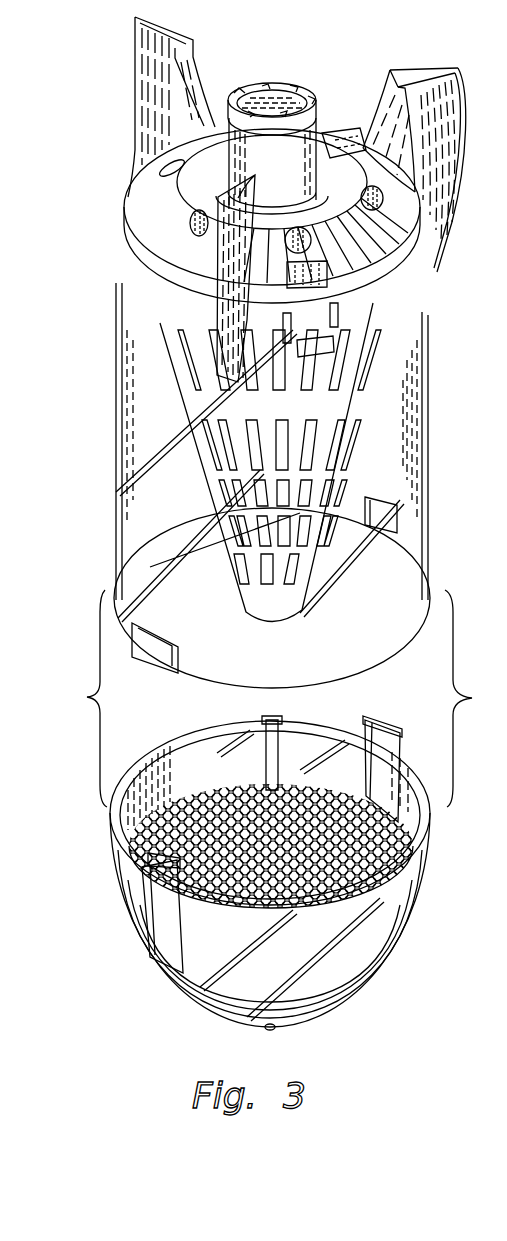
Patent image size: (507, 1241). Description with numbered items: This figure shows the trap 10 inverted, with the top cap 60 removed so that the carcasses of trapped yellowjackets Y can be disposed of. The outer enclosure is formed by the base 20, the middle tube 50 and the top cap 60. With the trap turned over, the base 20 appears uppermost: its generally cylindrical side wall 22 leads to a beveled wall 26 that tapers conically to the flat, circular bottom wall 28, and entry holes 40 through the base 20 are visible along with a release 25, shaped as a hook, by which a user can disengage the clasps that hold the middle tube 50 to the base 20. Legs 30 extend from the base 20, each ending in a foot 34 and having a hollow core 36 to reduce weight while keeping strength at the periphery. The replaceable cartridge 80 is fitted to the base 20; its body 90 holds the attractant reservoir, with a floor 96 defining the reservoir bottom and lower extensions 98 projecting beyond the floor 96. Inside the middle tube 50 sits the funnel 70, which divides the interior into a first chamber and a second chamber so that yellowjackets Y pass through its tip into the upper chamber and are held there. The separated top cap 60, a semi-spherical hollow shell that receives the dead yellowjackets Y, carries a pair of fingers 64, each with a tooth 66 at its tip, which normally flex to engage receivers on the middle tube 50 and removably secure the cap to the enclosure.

The trap 10 is at (448, 415).
The base 20 is at (118, 160).
The side wall 22 is at (124, 255).
The release 25 is at (320, 332).
The beveled wall 26 is at (386, 306).
The bottom wall 28 is at (335, 152).
The legs 30 is at (446, 160).
The foot 34 is at (442, 68).
The core 36 is at (398, 105).
The entry holes 40 is at (378, 200).
The middle tube 50 is at (405, 450).
The top cap 60 is at (128, 972).
The fingers 64 is at (384, 746).
The tooth 66 is at (388, 740).
The funnel 70 is at (170, 428).
The cartridge 80 is at (256, 60).
The body 90 is at (308, 135).
The floor 96 is at (262, 112).
The lower extensions 98 is at (288, 95).
The yellowjacket wasps Y is at (198, 817).